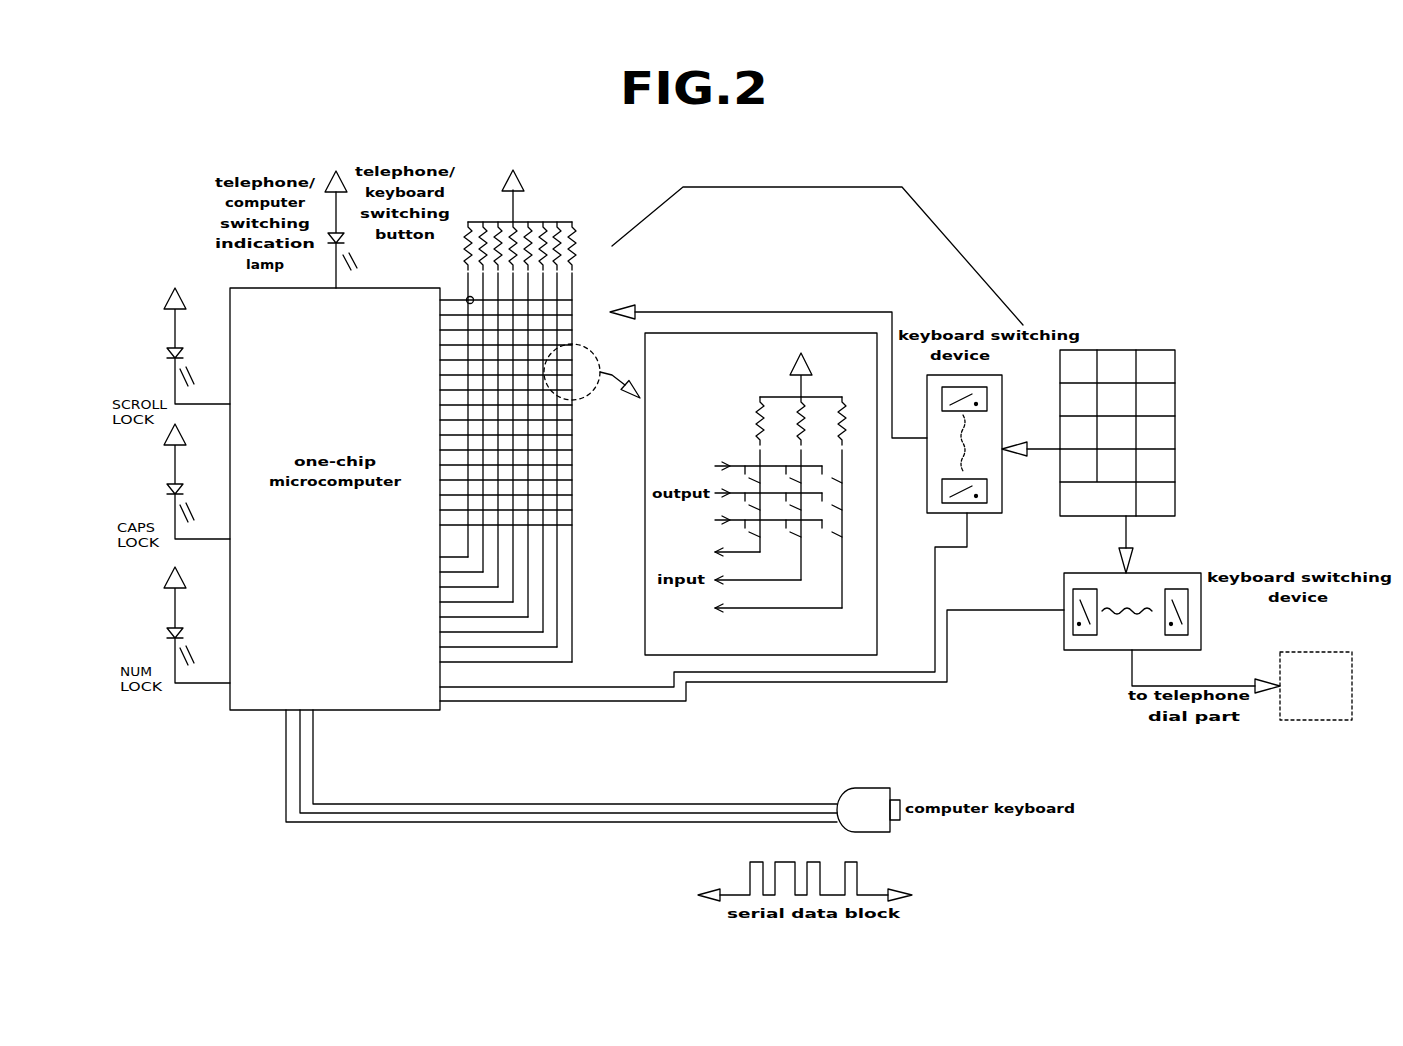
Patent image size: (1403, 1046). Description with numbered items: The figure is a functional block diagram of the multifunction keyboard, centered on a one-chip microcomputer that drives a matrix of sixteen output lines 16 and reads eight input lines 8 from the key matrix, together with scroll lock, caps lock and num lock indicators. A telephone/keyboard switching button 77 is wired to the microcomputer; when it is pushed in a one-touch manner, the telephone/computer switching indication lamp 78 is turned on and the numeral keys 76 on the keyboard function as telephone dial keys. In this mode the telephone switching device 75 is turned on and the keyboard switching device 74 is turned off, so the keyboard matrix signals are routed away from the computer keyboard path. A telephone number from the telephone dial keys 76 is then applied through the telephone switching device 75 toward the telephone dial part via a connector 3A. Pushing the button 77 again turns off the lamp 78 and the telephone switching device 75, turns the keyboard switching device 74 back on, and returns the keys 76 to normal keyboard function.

The keyboard switching device 74 is at (964, 444).
The telephone switching device 75 is at (1132, 611).
The numeral keys 76 is at (1143, 433).
The telephone/keyboard switching button 77 is at (380, 247).
The telephone/computer switching indication lamp 78 is at (347, 229).
The connector 3A is at (1326, 676).
The output lines 16 is at (472, 412).
The input lines 8 is at (476, 609).